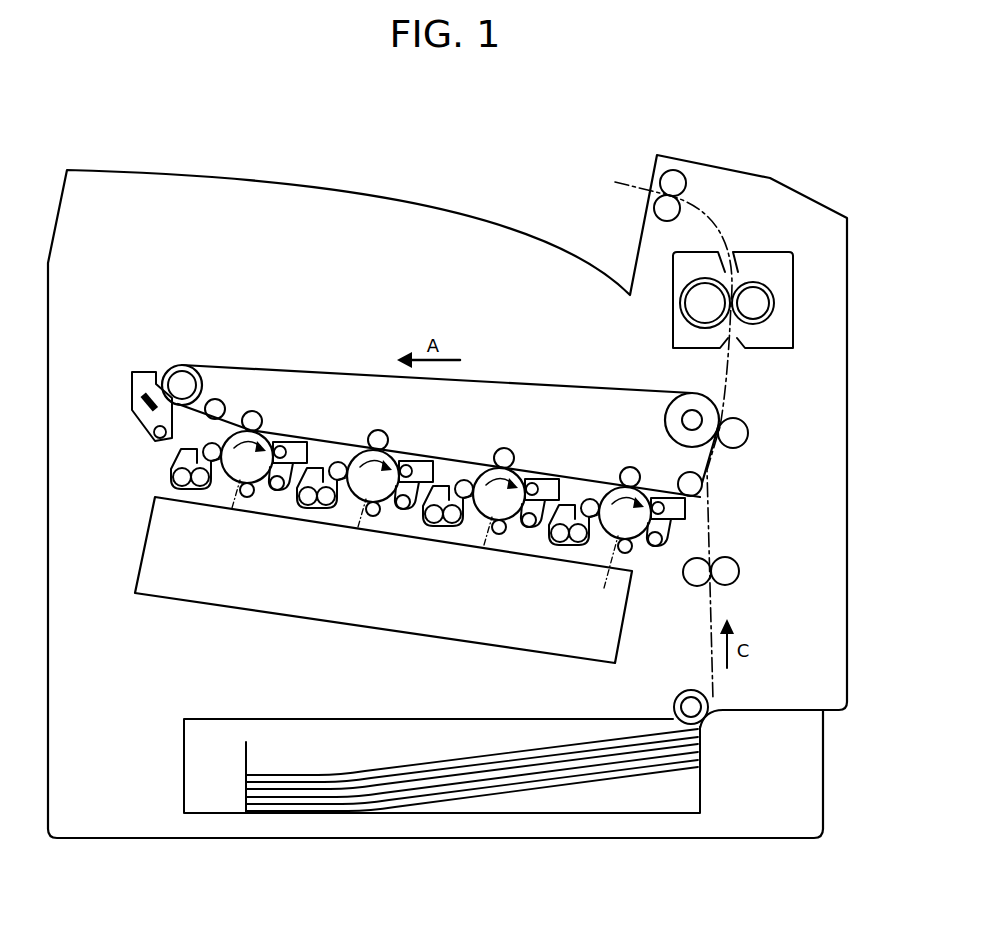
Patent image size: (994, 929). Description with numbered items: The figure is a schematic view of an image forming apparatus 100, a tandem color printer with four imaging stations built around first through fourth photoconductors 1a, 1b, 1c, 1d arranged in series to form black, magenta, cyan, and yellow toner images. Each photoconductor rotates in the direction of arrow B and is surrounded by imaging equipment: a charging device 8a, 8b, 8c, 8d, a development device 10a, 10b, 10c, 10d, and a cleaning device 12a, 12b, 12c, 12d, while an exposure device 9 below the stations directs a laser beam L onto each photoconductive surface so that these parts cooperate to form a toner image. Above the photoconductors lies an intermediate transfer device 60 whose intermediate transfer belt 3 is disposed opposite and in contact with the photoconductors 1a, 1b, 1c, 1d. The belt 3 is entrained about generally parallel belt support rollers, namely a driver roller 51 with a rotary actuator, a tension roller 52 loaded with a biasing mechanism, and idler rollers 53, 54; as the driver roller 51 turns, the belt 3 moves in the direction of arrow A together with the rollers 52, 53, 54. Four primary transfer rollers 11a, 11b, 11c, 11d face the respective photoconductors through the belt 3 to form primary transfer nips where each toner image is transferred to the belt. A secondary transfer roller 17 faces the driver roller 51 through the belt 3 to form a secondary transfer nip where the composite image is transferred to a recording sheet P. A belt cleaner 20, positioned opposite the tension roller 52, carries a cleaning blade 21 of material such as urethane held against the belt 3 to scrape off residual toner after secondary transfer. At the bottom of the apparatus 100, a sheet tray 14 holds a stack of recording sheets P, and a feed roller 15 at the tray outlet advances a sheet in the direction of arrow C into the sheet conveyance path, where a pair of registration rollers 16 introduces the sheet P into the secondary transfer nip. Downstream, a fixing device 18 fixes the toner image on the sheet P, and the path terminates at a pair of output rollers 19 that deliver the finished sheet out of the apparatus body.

The image forming apparatus 100 is at (113, 144).
The intermediate transfer belt 3 is at (342, 366).
The intermediate transfer device 60 is at (457, 408).
The tension roller 52 is at (181, 365).
The idler roller 53 is at (216, 400).
The driver roller 51 is at (672, 406).
The idler roller 54 is at (704, 487).
The secondary transfer roller 17 is at (748, 426).
The fixing device 18 is at (760, 252).
The output rollers 19 is at (683, 210).
The registration roller 16 is at (698, 588).
The feed roller 15 is at (680, 694).
The sheet tray 14 is at (702, 771).
The exposure device 9 is at (259, 612).
The belt cleaner 20 is at (132, 384).
The cleaning blade 21 is at (131, 382).
The photoconductor 1a is at (647, 490).
The photoconductor 1b is at (520, 470).
The photoconductor 1c is at (396, 455).
The photoconductor 1d is at (272, 442).
The primary transfer roller 11a is at (628, 466).
The primary transfer roller 11b is at (503, 447).
The primary transfer roller 11c is at (377, 429).
The primary transfer roller 11d is at (253, 410).
The charging device 8a is at (627, 554).
The charging device 8b is at (497, 535).
The charging device 8c is at (371, 517).
The charging device 8d is at (246, 498).
The development device 10a is at (576, 547).
The development device 10b is at (449, 528).
The development device 10c is at (323, 510).
The development device 10d is at (197, 491).
The cleaning device 12a is at (656, 548).
The cleaning device 12b is at (528, 529).
The cleaning device 12c is at (402, 511).
The cleaning device 12d is at (277, 492).
The recording sheet P is at (398, 766).
The laser beam L is at (604, 573).